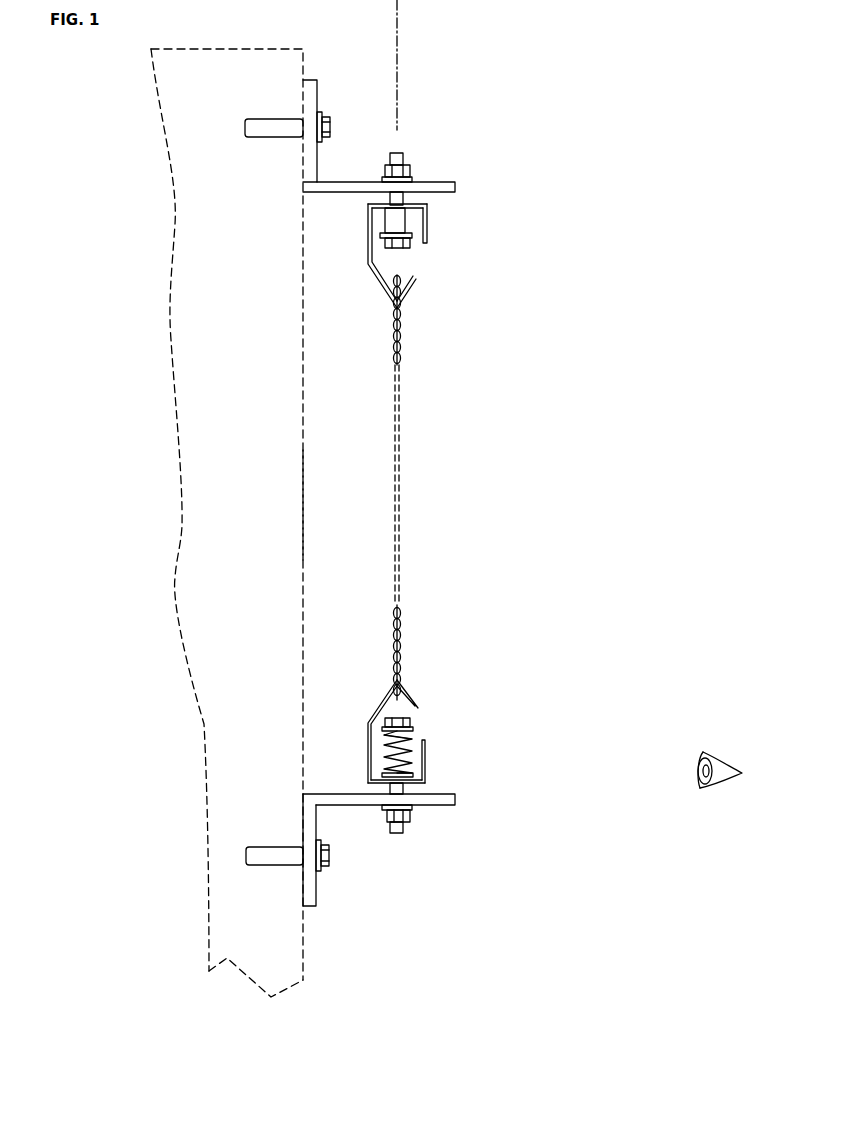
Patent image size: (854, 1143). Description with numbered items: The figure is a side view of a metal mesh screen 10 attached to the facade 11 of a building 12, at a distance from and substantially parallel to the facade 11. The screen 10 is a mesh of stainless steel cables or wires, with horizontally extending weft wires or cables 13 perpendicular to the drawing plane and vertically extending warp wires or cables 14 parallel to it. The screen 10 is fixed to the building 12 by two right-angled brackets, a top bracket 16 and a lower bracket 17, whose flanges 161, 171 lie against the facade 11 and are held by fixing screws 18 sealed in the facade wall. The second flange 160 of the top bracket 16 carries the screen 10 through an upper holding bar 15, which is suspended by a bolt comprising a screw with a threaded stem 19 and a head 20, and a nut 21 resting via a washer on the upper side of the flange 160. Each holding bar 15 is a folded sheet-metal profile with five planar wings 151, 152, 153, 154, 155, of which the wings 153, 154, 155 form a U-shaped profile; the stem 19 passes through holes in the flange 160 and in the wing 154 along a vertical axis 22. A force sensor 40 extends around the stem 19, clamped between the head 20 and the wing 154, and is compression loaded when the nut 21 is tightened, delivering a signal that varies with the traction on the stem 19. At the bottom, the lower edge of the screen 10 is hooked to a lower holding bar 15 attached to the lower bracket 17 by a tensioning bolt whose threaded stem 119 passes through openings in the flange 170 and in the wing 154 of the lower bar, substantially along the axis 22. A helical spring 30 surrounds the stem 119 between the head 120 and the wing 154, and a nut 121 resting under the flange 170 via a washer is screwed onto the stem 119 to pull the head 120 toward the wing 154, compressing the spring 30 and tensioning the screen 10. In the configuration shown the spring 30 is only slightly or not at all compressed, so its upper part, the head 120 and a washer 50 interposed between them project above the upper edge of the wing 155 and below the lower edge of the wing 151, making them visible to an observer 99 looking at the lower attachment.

The screen 10 is at (488, 470).
The facade 11 is at (308, 505).
The building 12 is at (227, 523).
The weft wires or cables 13 is at (395, 622).
The warp wires or cables 14 is at (395, 446).
The holding bar 15 is at (441, 496).
The top bracket 16 is at (412, 121).
The lower bracket 17 is at (412, 873).
The fixing screws 18 is at (256, 118).
The threaded stem 19 is at (395, 152).
The head 20 is at (408, 252).
The nut 21 is at (412, 168).
The vertical axis 22 is at (402, 36).
The helical spring 30 is at (413, 738).
The force sensor 40 is at (403, 220).
The washer 50 is at (414, 728).
The observer 99 is at (718, 785).
The threaded stem 119 is at (395, 834).
The head 120 is at (409, 722).
The nut 121 is at (410, 820).
The wing 151 is at (413, 290).
The wing 152 is at (380, 283).
The wing 153 is at (401, 496).
The wing 154 is at (374, 204).
The wing 155 is at (426, 242).
The flange 160 is at (442, 186).
The flange 161 is at (311, 94).
The flange 170 is at (440, 805).
The flange 171 is at (311, 898).